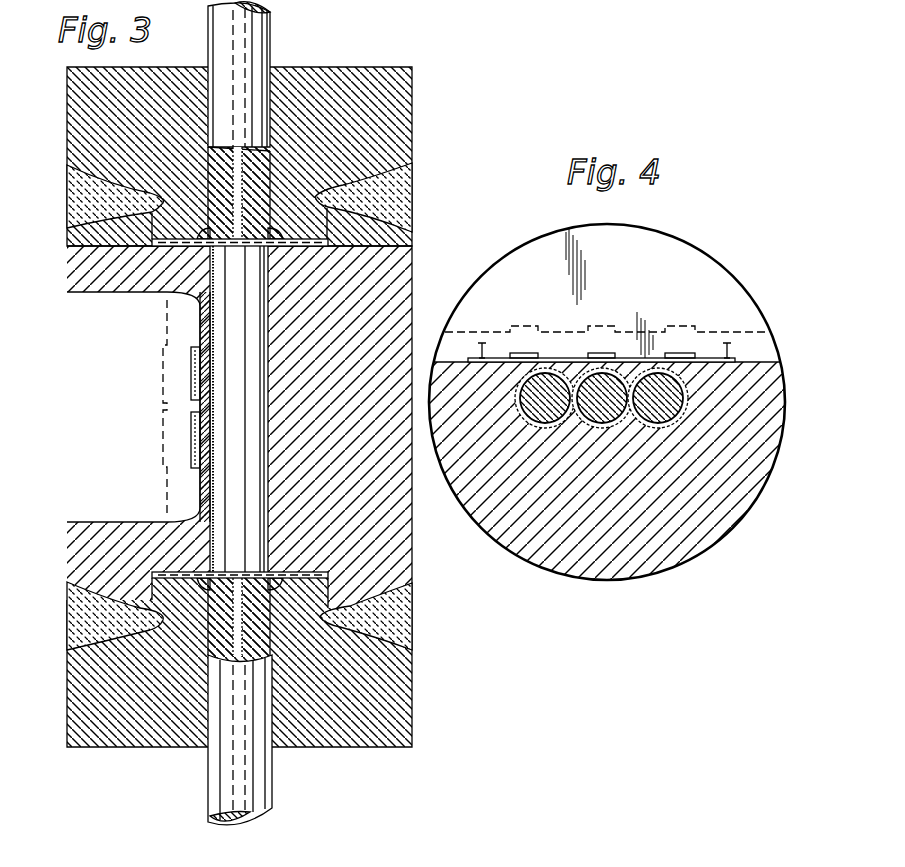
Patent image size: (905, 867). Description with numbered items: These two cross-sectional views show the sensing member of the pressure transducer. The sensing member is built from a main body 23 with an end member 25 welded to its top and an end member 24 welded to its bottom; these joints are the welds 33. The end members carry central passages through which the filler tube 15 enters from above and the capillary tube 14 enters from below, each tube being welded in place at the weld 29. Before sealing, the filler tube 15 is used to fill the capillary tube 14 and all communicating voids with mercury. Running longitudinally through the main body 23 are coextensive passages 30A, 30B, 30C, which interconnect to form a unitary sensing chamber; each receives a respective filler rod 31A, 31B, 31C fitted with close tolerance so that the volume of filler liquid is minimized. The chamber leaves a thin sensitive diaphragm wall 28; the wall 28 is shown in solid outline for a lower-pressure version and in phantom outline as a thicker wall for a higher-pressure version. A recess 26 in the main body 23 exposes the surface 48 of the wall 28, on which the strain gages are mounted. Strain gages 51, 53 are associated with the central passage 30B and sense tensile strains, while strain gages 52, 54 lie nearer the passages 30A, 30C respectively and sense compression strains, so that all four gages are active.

In FIG. 3, the capillary tube 14 is at (273, 791).
In FIG. 3, the filler tube 15 is at (275, 36).
In FIG. 3, the main body 23 is at (414, 247).
In FIG. 4, the main body 23 is at (761, 490).
In FIG. 3, the end member 24 is at (168, 748).
In FIG. 3, the end member 25 is at (414, 96).
In FIG. 3, the recess 26 is at (108, 376).
In FIG. 3, the sensitive (diaphragm) wall 28 is at (167, 394).
In FIG. 4, the sensitive (diaphragm) wall 28 is at (555, 334).
In FIG. 3, the weld 29 is at (289, 232).
In FIG. 4, the passage 30A is at (533, 430).
In FIG. 3, the passage 30B is at (270, 518).
In FIG. 4, the passage 30B is at (617, 423).
In FIG. 4, the passage 30C is at (653, 427).
In FIG. 4, the filler rod 31A is at (540, 430).
In FIG. 3, the filler rod 31B is at (212, 303).
In FIG. 4, the filler rod 31B is at (620, 427).
In FIG. 4, the filler rod 31C is at (668, 425).
In FIG. 3, the weld 33 is at (66, 174).
In FIG. 3, the surface 48 is at (198, 333).
In FIG. 4, the surface 48 is at (749, 362).
In FIG. 3, the strain gage 51 is at (188, 362).
In FIG. 4, the strain gage 52 is at (513, 352).
In FIG. 3, the strain gage 53 is at (188, 439).
In FIG. 4, the strain gage 53 is at (614, 352).
In FIG. 4, the strain gage 54 is at (698, 350).